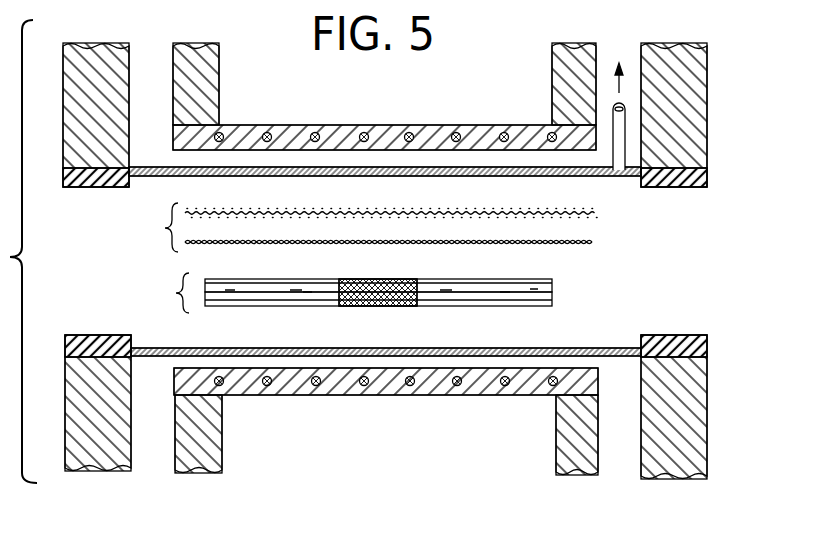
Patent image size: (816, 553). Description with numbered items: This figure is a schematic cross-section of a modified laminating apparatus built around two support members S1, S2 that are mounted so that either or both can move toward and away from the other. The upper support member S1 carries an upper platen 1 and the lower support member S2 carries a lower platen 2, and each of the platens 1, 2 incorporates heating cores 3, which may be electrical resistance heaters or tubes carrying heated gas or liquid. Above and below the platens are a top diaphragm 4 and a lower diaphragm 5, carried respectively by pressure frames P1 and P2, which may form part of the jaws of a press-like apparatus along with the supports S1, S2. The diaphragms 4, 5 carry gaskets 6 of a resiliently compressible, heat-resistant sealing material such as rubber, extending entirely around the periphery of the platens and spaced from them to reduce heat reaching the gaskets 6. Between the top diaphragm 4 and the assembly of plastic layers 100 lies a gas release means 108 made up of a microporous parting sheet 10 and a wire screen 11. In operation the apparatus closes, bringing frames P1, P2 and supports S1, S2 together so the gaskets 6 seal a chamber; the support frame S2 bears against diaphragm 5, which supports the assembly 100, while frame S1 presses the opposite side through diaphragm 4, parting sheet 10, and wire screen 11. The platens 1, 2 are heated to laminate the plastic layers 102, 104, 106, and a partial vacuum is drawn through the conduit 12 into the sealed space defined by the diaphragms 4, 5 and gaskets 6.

The upper platen 1 is at (382, 135).
The lower platen 2 is at (395, 386).
The heating cores 3 is at (312, 134).
The top diaphragm 4 is at (359, 171).
The lower diaphragm 5 is at (303, 348).
The gaskets 6 is at (97, 188).
The microporous parting sheet 10 is at (598, 243).
The wire screen 11 is at (598, 214).
The conduit 12 is at (621, 127).
The assembly of plastic layers 100 is at (364, 298).
The plastic layer 102 is at (394, 306).
The plastic layer 104 is at (553, 296).
The plastic layer 106 is at (553, 283).
The gas release means 108 is at (376, 235).
The upper pressure frame P1 is at (97, 57).
The lower pressure frame P2 is at (102, 465).
The upper support member S1 is at (194, 57).
The lower support member S2 is at (199, 465).